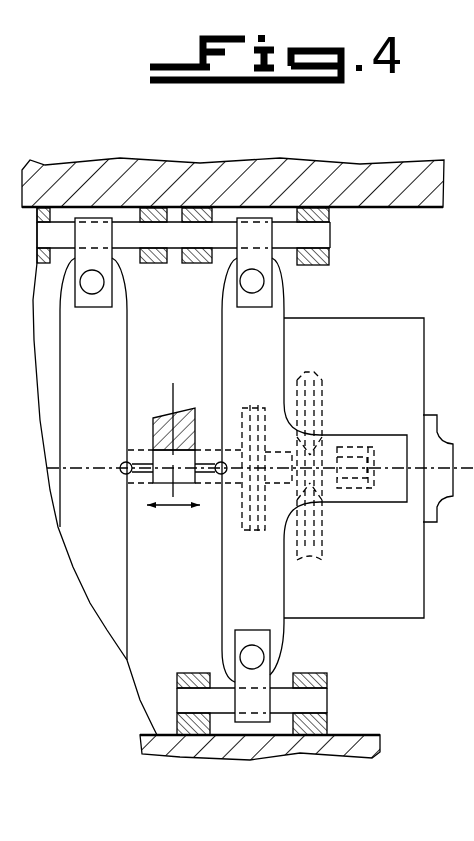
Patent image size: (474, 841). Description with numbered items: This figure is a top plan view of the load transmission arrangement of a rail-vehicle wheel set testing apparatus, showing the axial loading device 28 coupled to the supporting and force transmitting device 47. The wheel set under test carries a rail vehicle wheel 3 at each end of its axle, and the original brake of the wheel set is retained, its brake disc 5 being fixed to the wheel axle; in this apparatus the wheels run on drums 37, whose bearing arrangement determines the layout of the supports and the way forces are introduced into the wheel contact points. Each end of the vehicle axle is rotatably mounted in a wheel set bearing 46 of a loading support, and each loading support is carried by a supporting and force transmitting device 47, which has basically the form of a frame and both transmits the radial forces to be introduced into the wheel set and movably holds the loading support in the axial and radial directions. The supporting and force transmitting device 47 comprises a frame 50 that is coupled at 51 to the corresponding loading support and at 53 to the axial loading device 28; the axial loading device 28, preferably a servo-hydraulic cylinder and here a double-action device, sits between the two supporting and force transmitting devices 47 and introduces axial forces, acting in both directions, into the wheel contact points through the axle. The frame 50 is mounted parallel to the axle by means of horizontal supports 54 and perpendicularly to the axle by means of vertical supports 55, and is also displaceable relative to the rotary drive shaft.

The rail vehicle wheel 3 is at (367, 368).
The brake disc 5 is at (252, 404).
The axial loading device 28 is at (185, 459).
The drum 37 is at (416, 579).
The wheel set bearing 46 is at (365, 490).
The supporting and force transmitting device 47 is at (305, 296).
The frame 50 is at (118, 332).
The coupling to loading support 51 is at (394, 435).
The coupling to axial loading device 53 is at (122, 476).
The horizontal support 54 is at (277, 705).
The vertical support 55 is at (247, 289).